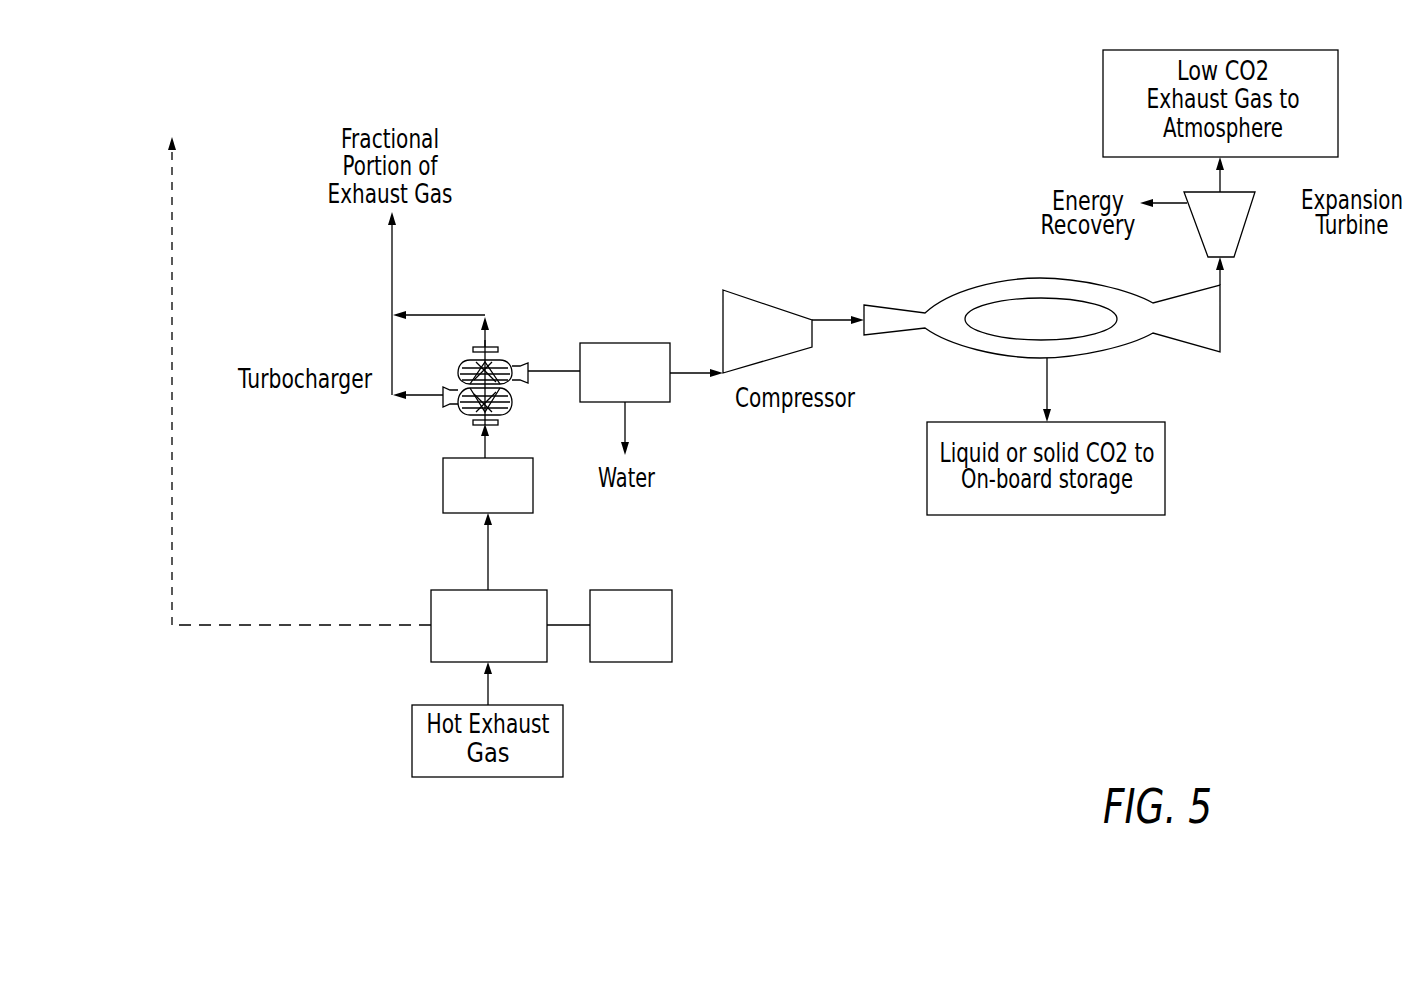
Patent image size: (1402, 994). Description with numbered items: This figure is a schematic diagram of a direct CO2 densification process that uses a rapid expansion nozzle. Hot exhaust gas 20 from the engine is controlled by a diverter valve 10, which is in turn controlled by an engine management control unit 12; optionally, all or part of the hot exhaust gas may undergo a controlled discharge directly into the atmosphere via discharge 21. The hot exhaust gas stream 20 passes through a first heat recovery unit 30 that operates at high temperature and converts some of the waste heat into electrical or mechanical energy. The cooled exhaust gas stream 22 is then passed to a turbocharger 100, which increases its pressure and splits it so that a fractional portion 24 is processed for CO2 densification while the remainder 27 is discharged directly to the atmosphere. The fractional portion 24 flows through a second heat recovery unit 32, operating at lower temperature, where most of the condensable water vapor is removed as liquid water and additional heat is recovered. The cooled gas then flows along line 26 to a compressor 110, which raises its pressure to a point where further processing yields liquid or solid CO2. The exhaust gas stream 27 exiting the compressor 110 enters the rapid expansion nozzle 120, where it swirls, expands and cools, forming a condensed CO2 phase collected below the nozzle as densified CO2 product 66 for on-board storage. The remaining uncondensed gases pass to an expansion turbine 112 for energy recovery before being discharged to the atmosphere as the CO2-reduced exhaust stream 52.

The diverter valve 10 is at (527, 650).
The engine management control unit 12 is at (640, 630).
The hot exhaust gas stream 20 is at (489, 570).
The discharge 21 is at (286, 381).
The cooled exhaust gas stream 22 is at (487, 438).
The fractional portion of exhaust gas stream 24 is at (549, 369).
The exhaust line to compressor 26 is at (692, 374).
The remainder exhaust gas stream 27 is at (393, 265).
The first heat recovery unit 30 is at (533, 487).
The second heat recovery unit 32 is at (640, 343).
The exhaust gas stream of reduced CO2 content 52 is at (1223, 186).
The densified CO2 product 66 is at (1048, 388).
The turbocharger 100 is at (470, 360).
The compressor 110 is at (740, 306).
The expansion turbine 112 is at (1232, 250).
The rapid expansion nozzle 120 is at (1024, 280).